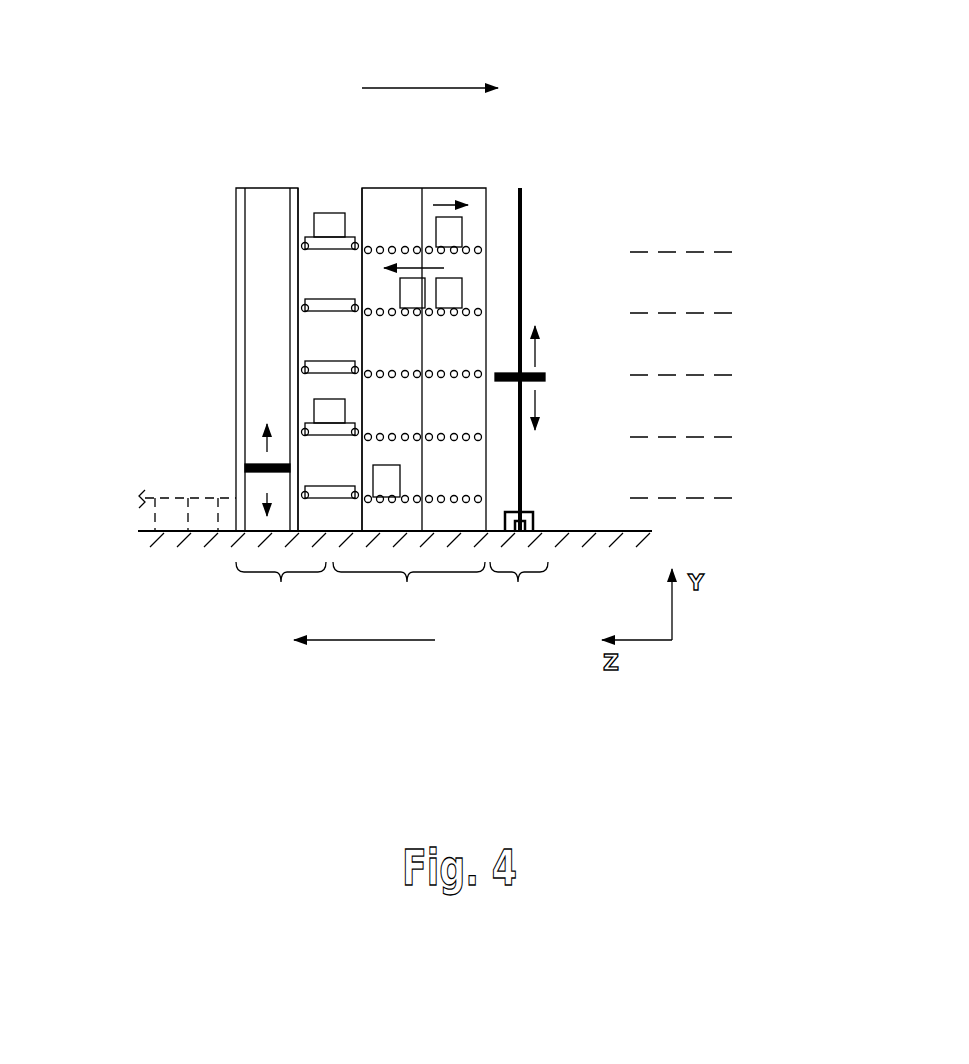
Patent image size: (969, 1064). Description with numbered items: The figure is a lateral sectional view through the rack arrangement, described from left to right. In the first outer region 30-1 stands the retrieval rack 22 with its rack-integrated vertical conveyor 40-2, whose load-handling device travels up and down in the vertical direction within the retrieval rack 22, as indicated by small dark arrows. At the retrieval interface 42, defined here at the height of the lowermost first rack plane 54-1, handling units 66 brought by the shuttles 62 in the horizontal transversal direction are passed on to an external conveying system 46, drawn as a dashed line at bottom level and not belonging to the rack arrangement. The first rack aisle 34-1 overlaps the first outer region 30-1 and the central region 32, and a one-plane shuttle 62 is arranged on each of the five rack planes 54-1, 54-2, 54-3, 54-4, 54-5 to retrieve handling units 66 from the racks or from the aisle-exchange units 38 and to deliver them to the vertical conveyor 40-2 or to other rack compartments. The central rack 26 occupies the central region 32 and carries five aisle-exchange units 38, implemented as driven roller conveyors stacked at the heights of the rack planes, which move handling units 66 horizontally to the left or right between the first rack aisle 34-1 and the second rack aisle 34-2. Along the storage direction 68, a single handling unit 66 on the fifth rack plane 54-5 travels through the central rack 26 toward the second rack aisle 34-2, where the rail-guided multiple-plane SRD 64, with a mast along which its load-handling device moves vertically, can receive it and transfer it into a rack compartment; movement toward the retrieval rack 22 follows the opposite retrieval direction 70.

The retrieval rack 22 is at (232, 206).
The central rack 26 is at (414, 184).
The first outer region 30-1 is at (281, 403).
The central region 32 is at (409, 411).
The first rack aisle 34-1 is at (318, 185).
The second rack aisle 34-2 is at (546, 357).
The aisle-exchange unit 38 is at (460, 386).
The vertical conveyor 40-2 is at (266, 212).
The retrieval interface 42 is at (226, 486).
The conveying system 46 is at (146, 494).
The first rack plane 54-1 is at (717, 500).
The second rack plane 54-2 is at (717, 439).
The third rack plane 54-3 is at (717, 377).
The fourth rack plane 54-4 is at (717, 315).
The fifth rack plane 54-5 is at (717, 254).
The one-plane SRD/shuttle 62 is at (278, 244).
The multiple-plane SRD 64 is at (526, 212).
The handling unit 66 is at (335, 205).
The storage direction 68 is at (400, 84).
The retrieval direction 70 is at (350, 645).